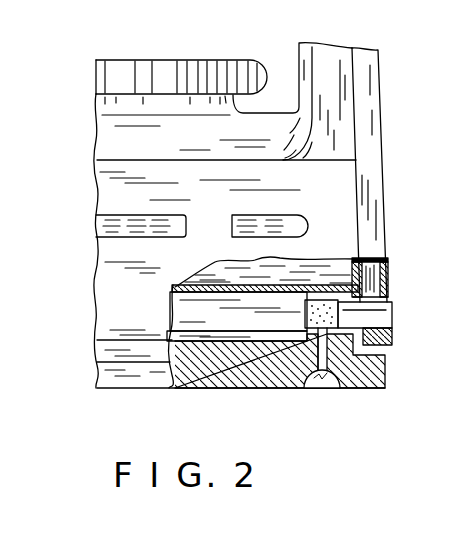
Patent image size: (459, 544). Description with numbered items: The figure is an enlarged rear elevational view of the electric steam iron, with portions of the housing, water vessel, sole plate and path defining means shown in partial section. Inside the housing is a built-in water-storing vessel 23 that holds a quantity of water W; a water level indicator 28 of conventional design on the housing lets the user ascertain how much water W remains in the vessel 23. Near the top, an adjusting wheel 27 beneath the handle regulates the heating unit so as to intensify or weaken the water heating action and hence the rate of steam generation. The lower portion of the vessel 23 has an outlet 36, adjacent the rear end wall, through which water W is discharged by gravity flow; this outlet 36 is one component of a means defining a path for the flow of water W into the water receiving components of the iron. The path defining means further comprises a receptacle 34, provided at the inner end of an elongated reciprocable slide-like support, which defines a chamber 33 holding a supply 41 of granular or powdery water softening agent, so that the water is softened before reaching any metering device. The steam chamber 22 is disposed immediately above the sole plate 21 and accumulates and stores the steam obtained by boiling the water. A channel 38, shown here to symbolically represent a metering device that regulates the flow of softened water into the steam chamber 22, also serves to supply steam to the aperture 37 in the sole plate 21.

The sole plate 21 is at (265, 370).
The steam chamber 22 is at (208, 322).
The water-storing vessel 23 is at (388, 266).
The adjusting wheel 27 is at (165, 76).
The water level indicator 28 is at (108, 231).
The chamber 33 is at (458, 95).
The receptacle 34 is at (458, 478).
The outlet 36 is at (390, 283).
The aperture 37 is at (323, 383).
The channel 38 is at (353, 355).
The supply of water softening agent 41 is at (392, 318).
The water W is at (302, 272).